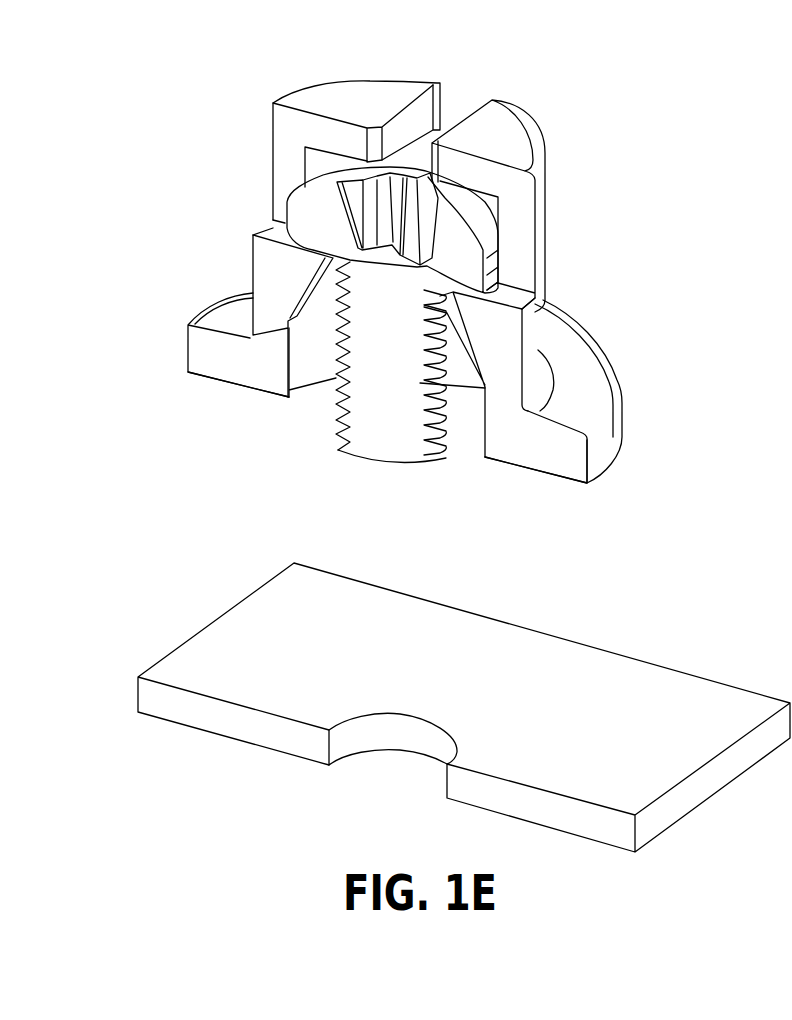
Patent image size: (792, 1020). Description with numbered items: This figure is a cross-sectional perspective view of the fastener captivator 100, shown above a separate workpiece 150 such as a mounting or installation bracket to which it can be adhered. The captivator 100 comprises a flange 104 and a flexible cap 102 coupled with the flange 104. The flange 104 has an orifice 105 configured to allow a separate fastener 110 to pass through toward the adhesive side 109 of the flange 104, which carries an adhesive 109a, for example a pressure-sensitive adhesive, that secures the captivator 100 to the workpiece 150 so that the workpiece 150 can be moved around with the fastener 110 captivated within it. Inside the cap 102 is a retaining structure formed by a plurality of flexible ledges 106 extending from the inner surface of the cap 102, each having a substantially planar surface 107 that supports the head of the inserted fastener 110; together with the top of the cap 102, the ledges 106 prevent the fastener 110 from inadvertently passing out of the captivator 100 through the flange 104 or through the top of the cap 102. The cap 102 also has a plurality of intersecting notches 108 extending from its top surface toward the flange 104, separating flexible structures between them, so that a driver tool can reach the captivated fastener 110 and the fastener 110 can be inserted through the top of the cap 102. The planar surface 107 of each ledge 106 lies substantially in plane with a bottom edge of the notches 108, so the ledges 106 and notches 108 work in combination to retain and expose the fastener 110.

The fastener captivator 100 is at (298, 77).
The flexible cap 102 is at (512, 137).
The flange 104 is at (593, 366).
The orifice 105 is at (468, 452).
The flexible ledges 106 is at (282, 265).
The planar surface 107 is at (268, 230).
The intersecting notches 108 is at (467, 97).
The adhesive side 109 is at (217, 383).
The adhesive 109a is at (247, 393).
The fastener 110 is at (402, 427).
The workpiece 150 is at (641, 782).